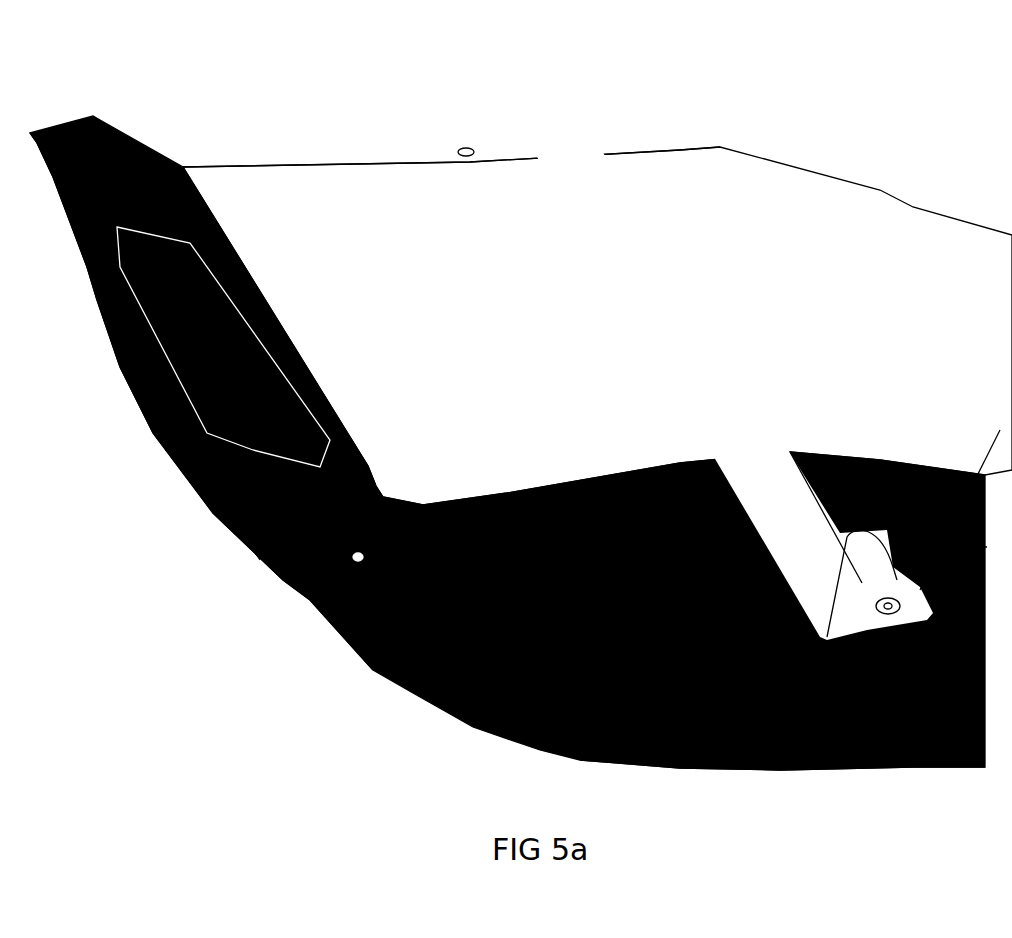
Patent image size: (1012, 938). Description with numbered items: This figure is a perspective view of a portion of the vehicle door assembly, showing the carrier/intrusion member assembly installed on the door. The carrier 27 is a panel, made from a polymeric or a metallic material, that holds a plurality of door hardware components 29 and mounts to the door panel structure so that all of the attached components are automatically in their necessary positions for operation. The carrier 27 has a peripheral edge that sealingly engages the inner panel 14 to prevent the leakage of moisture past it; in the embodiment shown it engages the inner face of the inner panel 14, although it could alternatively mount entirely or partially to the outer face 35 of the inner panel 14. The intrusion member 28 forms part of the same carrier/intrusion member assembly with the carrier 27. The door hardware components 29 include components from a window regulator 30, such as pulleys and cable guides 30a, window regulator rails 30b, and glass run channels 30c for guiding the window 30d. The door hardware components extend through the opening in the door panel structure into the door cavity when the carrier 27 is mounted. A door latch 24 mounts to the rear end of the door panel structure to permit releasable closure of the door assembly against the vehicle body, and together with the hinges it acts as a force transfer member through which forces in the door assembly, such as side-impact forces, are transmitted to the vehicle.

The inner panel 14 is at (408, 693).
The door latch 24 is at (155, 440).
The carrier 27 is at (517, 707).
The intrusion member 28 is at (95, 310).
The door hardware components 29 is at (466, 140).
The window regulator 30 is at (597, 266).
The pulleys and cable guides 30a is at (793, 770).
The window regulator rails 30b is at (672, 768).
The glass run channels 30c is at (223, 527).
The window 30d is at (335, 178).
The outer face of the inner panel 35 is at (320, 607).